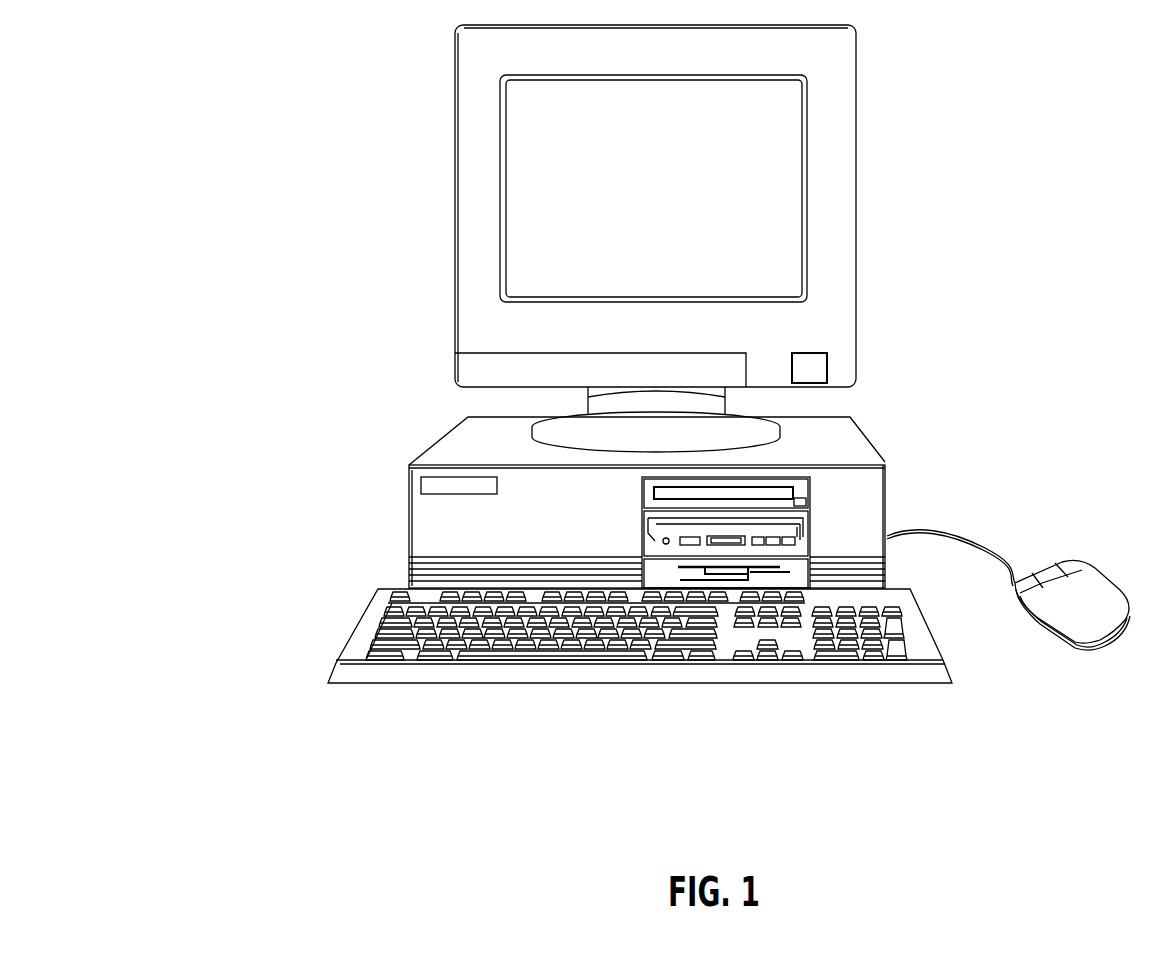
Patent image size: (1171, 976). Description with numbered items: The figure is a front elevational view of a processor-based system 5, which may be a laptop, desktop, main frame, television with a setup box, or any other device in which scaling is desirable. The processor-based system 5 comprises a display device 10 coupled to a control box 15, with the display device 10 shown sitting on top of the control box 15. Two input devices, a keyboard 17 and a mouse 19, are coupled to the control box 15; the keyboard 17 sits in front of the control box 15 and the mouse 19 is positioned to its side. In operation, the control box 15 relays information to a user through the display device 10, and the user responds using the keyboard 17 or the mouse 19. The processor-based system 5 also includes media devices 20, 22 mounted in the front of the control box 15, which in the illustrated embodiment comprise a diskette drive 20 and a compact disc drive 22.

The processor-based system 5 is at (292, 705).
The display device 10 is at (856, 218).
The control box 15 is at (699, 470).
The keyboard 17 is at (920, 620).
The mouse 19 is at (1100, 577).
The media device 20 is at (748, 568).
The media device 22 is at (778, 491).